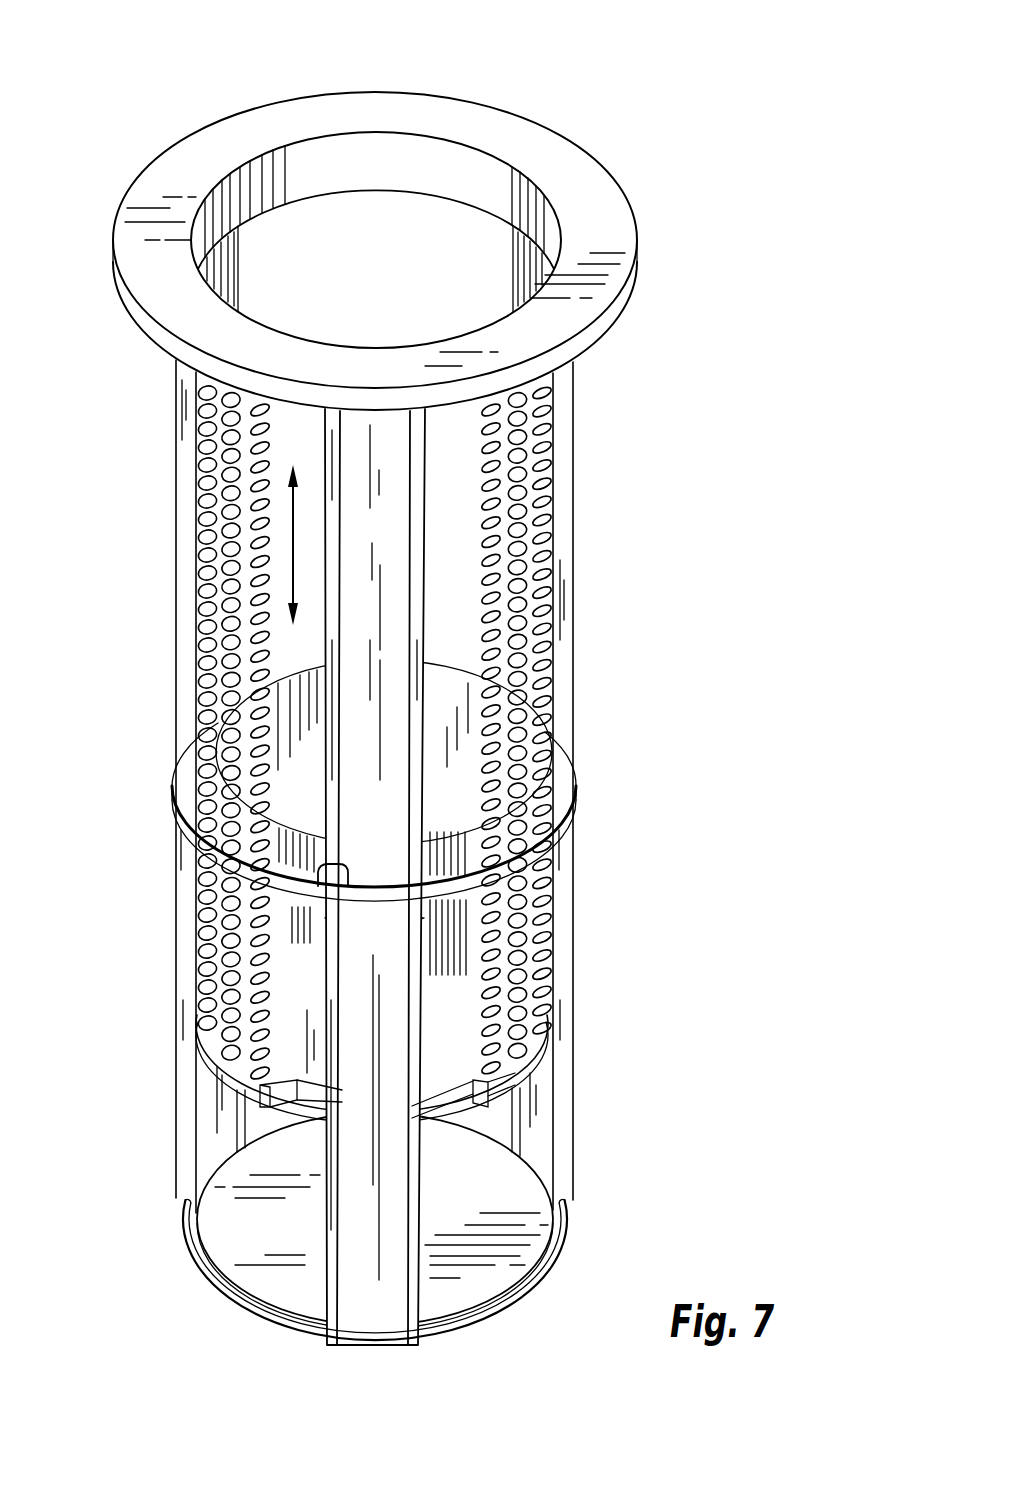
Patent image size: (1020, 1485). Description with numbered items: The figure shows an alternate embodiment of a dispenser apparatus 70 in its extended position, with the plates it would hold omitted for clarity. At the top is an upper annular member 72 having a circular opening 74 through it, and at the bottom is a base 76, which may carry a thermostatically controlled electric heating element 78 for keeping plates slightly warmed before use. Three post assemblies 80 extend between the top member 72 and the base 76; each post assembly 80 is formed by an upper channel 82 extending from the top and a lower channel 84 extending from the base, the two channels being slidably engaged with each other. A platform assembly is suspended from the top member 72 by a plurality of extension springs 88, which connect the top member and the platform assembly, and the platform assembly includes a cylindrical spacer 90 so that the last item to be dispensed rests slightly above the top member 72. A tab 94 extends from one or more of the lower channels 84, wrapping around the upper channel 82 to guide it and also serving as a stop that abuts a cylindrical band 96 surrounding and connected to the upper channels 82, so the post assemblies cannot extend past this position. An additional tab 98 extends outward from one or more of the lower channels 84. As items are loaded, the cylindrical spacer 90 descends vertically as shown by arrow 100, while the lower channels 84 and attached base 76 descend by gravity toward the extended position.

The dispenser apparatus 70 is at (735, 683).
The upper annular member 72 is at (593, 220).
The circular opening 74 is at (462, 170).
The base 76 is at (528, 1188).
The thermostatically controlled electric heating element 78 is at (572, 1243).
The post assemblies 80 is at (183, 473).
The upper channel 82 is at (183, 565).
The lower channel 84 is at (187, 1102).
The extension springs 88 is at (553, 563).
The cylindrical spacer 90 is at (470, 990).
The tab 94 is at (330, 875).
The cylindrical band 96 is at (570, 807).
The additional tab 98 is at (500, 1127).
The arrow 100 is at (293, 545).